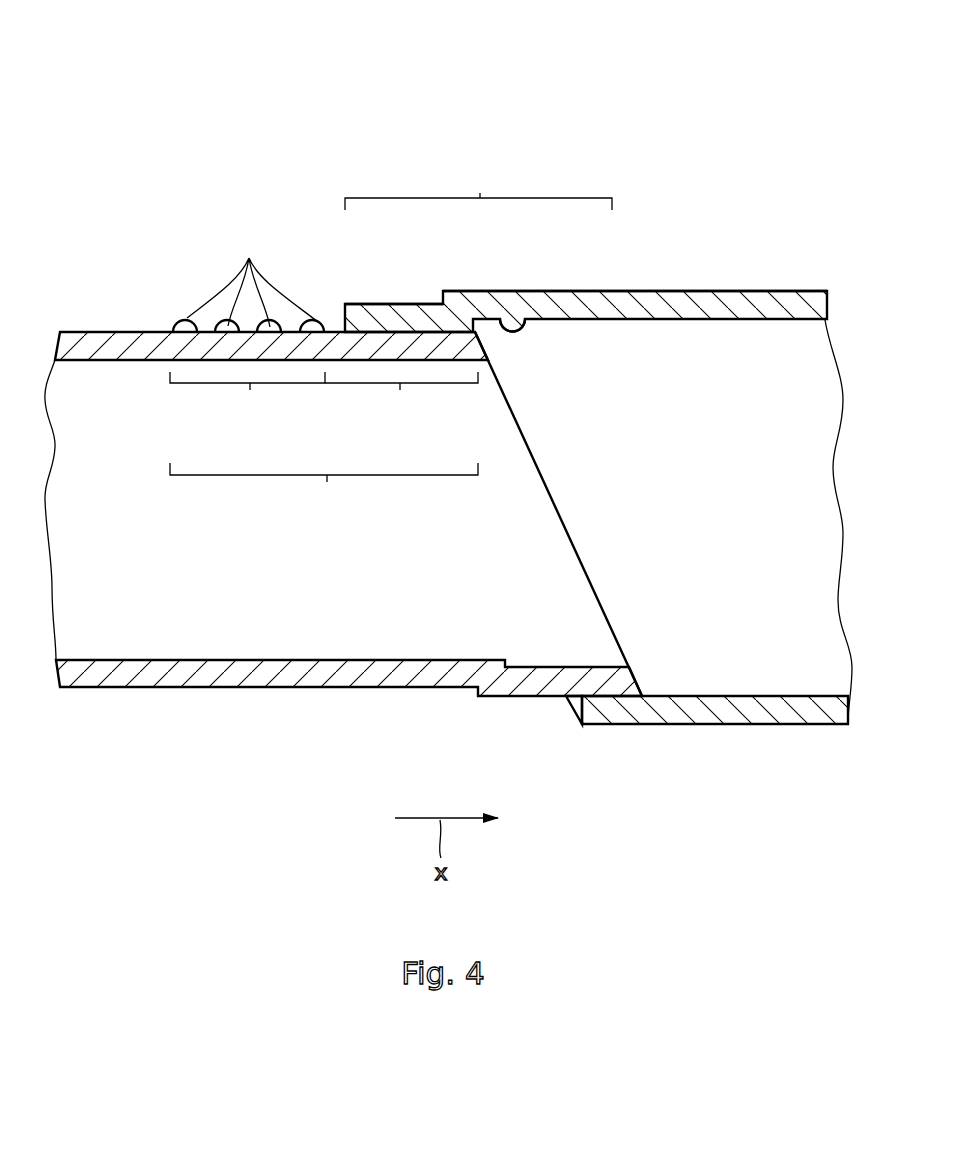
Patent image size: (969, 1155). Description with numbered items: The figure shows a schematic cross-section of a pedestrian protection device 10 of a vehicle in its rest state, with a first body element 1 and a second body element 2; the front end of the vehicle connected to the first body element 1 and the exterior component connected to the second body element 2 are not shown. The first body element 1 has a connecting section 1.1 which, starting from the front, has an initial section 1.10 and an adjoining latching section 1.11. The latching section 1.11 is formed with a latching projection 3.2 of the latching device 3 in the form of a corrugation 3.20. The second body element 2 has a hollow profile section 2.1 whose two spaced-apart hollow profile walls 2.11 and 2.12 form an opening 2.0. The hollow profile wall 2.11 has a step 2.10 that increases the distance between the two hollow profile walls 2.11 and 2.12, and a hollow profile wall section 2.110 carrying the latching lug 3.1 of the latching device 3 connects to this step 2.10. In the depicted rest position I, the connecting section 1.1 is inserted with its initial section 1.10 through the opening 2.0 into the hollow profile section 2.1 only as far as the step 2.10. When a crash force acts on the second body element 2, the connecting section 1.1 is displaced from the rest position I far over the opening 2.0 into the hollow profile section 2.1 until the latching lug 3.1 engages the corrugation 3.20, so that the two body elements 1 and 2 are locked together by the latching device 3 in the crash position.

The pedestrian protection device 10 is at (208, 148).
The rest position I is at (610, 150).
The first body element 1 is at (159, 566).
The second body element 2 is at (722, 506).
The latching device 3 is at (170, 290).
The latching lug 3.1 is at (521, 327).
The latching projection 3.2 is at (254, 276).
The corrugation 3.20 is at (248, 326).
The connecting section 1.1 is at (327, 482).
The initial section 1.10 is at (400, 390).
The latching section 1.11 is at (250, 390).
The opening 2.0 is at (567, 698).
The hollow profile section 2.1 is at (480, 196).
The step 2.10 is at (487, 320).
The hollow profile wall 2.11 is at (397, 310).
The hollow profile wall section 2.110 is at (711, 318).
The hollow profile wall 2.12 is at (776, 718).